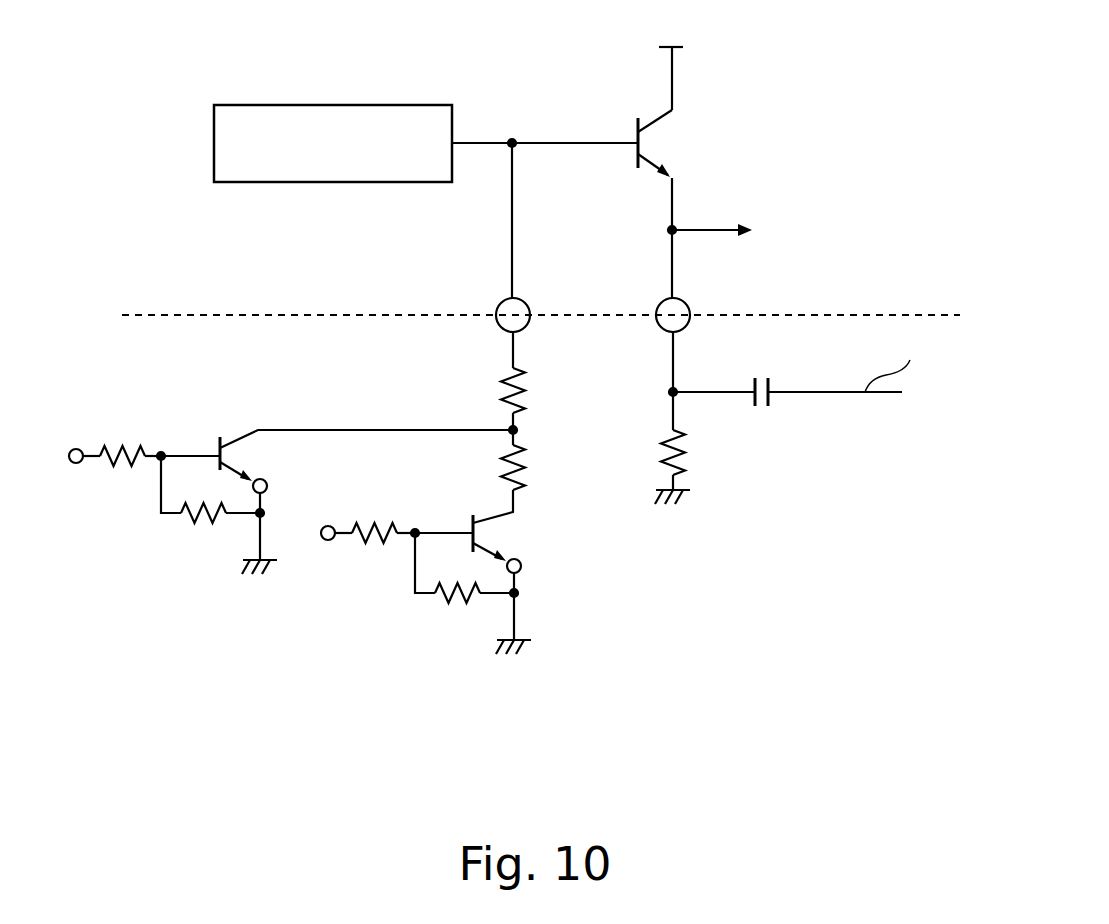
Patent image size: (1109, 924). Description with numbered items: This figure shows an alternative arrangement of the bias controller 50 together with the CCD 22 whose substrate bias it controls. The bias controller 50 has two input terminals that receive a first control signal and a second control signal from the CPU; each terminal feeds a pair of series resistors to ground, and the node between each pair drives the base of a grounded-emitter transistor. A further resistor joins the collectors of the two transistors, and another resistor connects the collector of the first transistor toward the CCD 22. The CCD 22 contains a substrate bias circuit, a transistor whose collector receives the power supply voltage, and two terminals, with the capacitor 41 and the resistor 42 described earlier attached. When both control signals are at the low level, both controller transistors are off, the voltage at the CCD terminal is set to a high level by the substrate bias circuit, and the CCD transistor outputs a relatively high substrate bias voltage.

The CCD 22 is at (806, 68).
The capacitor 41 is at (760, 408).
The resistor 42 is at (690, 460).
The bias controller 50 is at (328, 654).